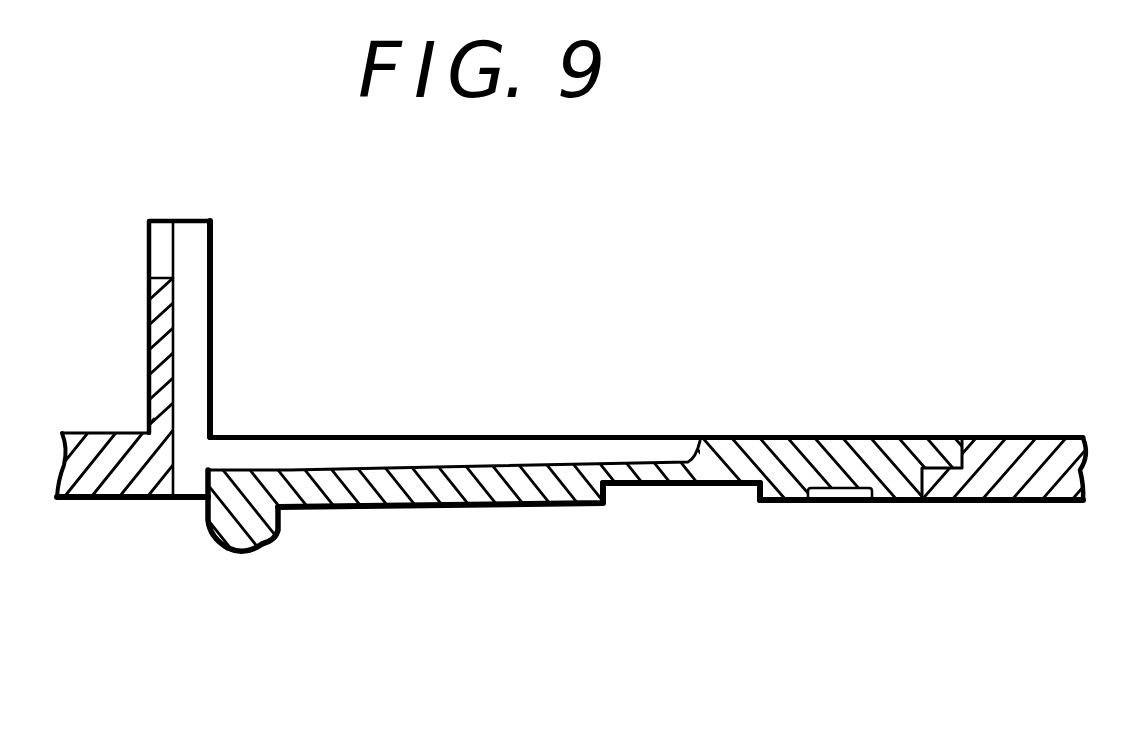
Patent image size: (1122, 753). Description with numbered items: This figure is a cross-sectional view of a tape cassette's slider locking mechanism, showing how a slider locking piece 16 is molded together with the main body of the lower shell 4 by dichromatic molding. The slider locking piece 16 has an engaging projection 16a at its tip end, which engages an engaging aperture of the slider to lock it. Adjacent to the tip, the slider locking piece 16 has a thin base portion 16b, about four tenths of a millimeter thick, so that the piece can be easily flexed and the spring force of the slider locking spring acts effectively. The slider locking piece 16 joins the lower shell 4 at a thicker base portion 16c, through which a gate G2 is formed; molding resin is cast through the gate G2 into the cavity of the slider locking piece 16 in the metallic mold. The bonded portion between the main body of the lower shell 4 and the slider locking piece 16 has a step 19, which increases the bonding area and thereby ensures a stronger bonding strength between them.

The slider locking piece 16 is at (438, 488).
The engaging projection 16a is at (240, 530).
The base portion 16b is at (652, 470).
The base portion 16c is at (828, 452).
The step 19 is at (943, 452).
The lower shell 4 is at (1003, 483).
The gate G2 is at (844, 489).